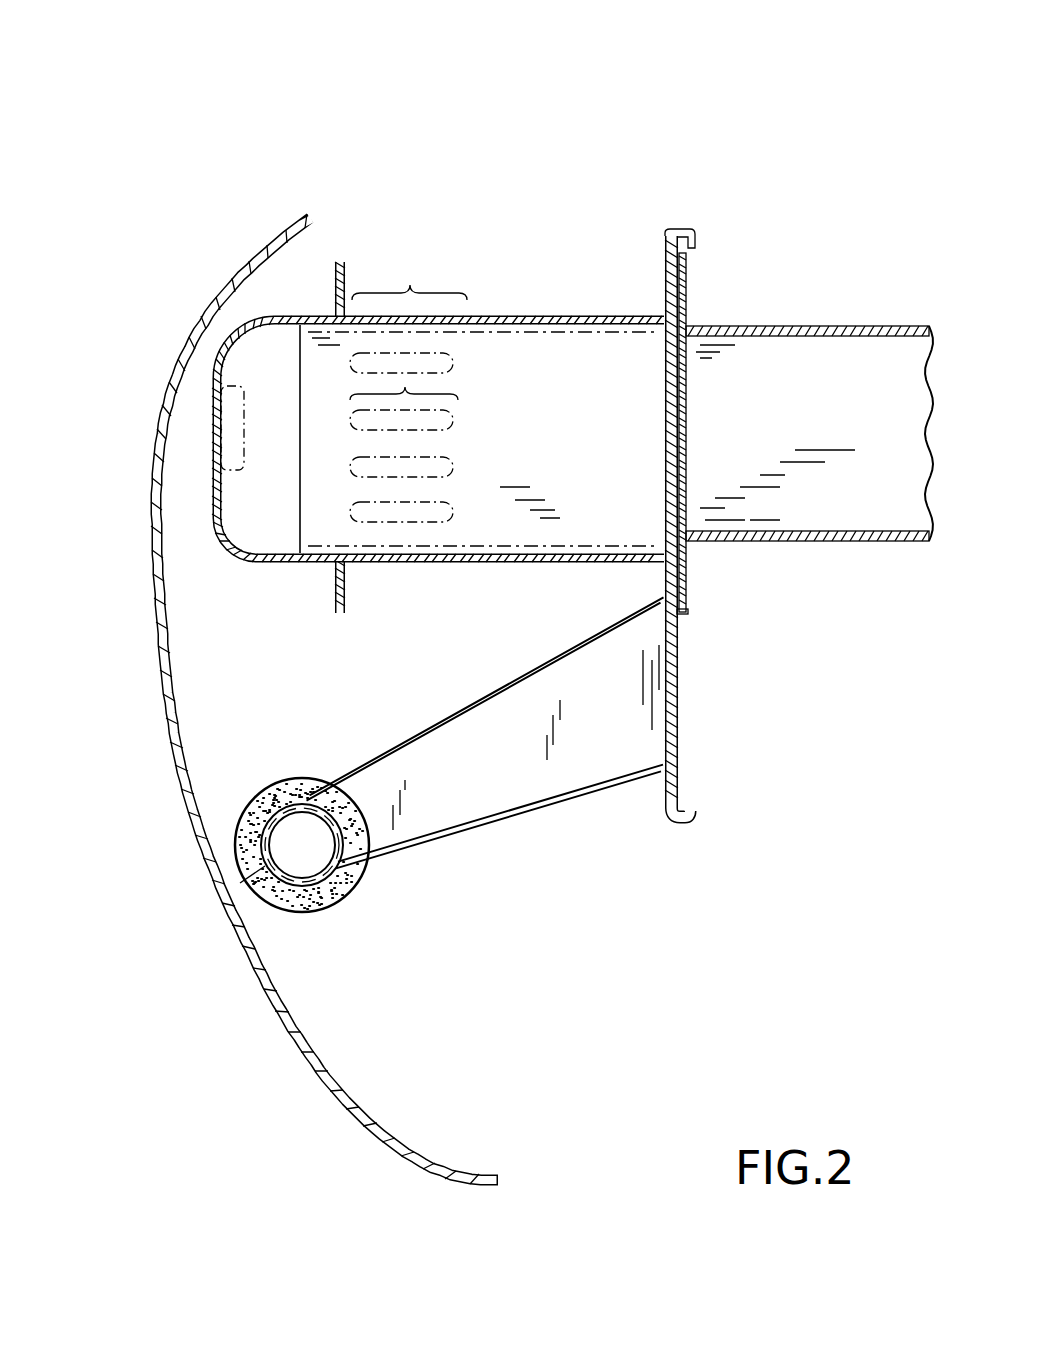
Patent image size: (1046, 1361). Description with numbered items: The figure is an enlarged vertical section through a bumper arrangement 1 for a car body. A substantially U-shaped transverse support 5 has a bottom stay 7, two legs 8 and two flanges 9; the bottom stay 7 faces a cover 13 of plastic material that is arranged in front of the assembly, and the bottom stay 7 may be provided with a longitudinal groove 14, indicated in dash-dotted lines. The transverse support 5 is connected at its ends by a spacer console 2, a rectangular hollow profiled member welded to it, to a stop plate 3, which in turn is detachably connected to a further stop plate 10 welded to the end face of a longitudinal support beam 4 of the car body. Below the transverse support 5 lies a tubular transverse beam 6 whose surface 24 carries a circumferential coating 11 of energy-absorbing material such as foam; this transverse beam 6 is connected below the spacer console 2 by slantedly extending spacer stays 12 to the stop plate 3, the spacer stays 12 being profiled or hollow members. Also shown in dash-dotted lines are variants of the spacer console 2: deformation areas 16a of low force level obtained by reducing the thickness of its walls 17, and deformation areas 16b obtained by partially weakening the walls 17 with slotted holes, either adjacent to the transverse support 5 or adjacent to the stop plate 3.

The bumper arrangement 1 is at (316, 100).
The spacer console 2 is at (517, 305).
The stop plate 3 is at (663, 285).
The longitudinal support beam 4 is at (890, 315).
The transverse support 5 is at (236, 580).
The transverse beam 6 is at (302, 765).
The bottom stay 7 is at (210, 503).
The leg 8 is at (285, 312).
The flange 9 is at (345, 268).
The stop plate 10 is at (687, 310).
The circumferential coating 11 is at (337, 893).
The spacer stay 12 is at (522, 772).
The cover 13 is at (157, 643).
The longitudinal groove 14 is at (233, 429).
The deformation area 16a is at (409, 272).
The deformation area 16b is at (405, 380).
The wall 17 is at (450, 560).
The surface 24 is at (240, 883).